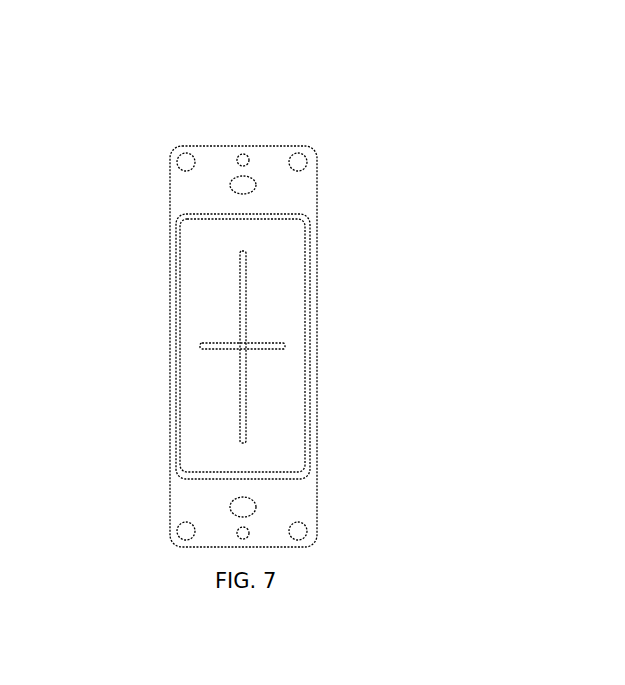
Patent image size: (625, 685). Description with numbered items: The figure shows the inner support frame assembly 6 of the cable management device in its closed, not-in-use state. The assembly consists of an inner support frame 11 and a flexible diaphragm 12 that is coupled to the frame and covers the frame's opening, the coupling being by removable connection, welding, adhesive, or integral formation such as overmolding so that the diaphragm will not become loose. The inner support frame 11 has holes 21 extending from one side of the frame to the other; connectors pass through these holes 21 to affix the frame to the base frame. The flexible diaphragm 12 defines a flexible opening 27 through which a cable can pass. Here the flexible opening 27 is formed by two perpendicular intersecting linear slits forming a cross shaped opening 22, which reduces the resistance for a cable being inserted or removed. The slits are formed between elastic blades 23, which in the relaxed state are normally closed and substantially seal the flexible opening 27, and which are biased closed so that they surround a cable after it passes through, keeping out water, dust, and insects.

The inner support frame assembly 6 is at (407, 289).
The inner support frame 11 is at (303, 156).
The flexible diaphragm 12 is at (170, 216).
The hole 21 is at (258, 166).
The cross shaped opening 22 is at (157, 358).
The elastic blades 23 is at (293, 399).
The flexible opening 27 is at (293, 246).